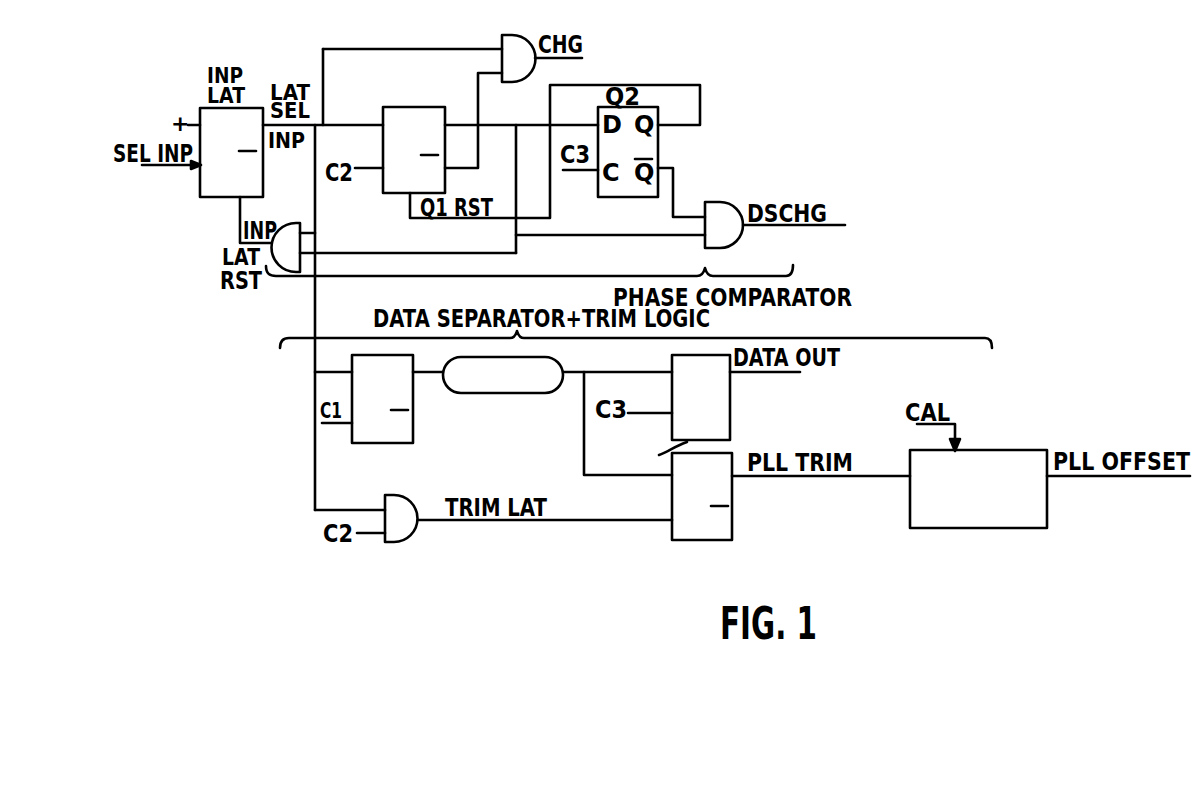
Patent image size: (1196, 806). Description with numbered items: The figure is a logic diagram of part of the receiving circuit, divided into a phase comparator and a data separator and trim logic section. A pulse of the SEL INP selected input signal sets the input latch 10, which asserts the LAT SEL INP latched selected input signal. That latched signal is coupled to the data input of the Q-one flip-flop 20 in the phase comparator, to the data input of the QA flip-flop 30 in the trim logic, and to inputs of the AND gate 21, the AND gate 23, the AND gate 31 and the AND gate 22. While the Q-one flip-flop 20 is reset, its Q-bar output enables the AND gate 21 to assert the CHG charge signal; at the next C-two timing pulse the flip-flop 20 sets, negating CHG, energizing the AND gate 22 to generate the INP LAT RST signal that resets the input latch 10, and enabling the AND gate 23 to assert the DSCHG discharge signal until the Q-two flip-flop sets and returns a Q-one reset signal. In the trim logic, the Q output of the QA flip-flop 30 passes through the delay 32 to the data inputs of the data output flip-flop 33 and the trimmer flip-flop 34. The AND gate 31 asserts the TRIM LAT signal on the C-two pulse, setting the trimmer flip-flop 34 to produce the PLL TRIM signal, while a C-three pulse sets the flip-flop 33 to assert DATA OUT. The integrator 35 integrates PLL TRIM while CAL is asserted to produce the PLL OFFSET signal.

The input latch 10 is at (207, 197).
The Q1 flip-flop 20 is at (393, 194).
The AND gate 21 is at (510, 38).
The AND gate 22 is at (288, 222).
The AND gate 23 is at (723, 206).
The QA flip-flop 30 is at (413, 423).
The AND gate 31 is at (402, 494).
The delay 32 is at (515, 393).
The data output flip-flop 33 is at (730, 403).
The trimmer flip-flop 34 is at (732, 502).
The integrator 35 is at (978, 529).